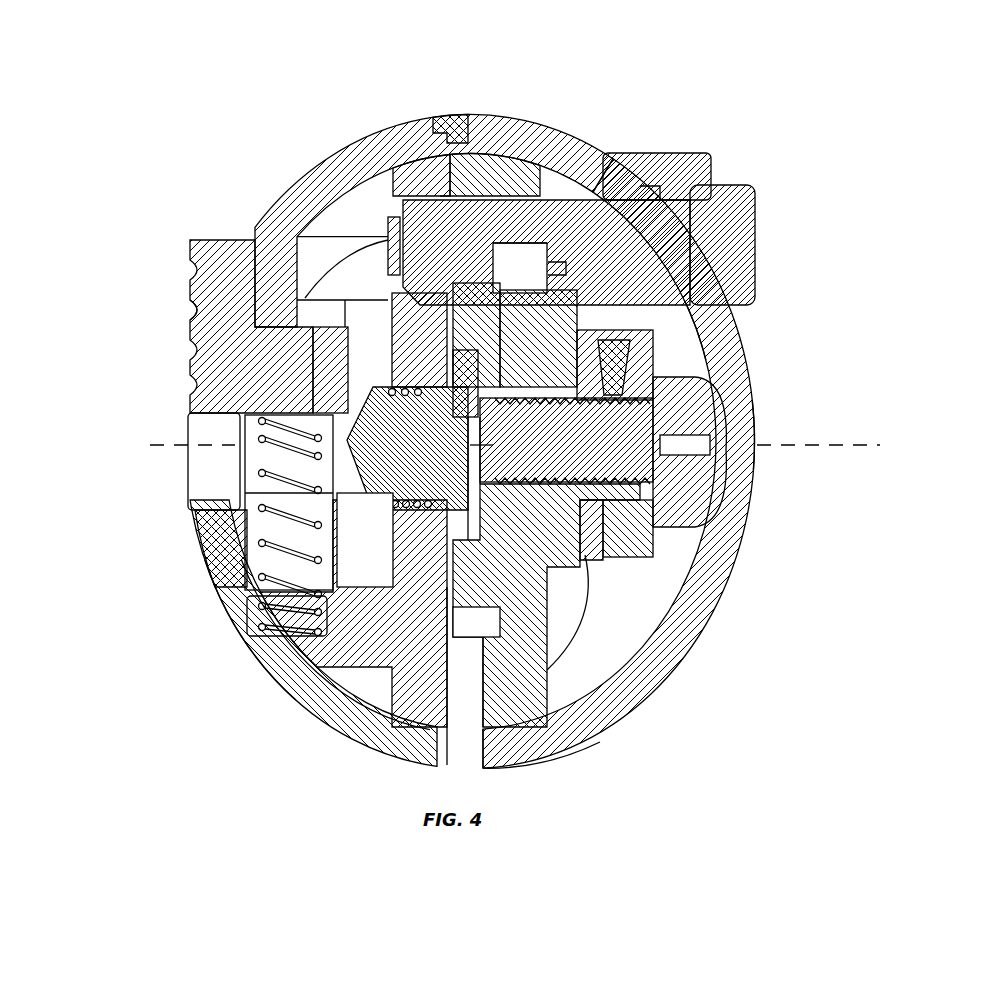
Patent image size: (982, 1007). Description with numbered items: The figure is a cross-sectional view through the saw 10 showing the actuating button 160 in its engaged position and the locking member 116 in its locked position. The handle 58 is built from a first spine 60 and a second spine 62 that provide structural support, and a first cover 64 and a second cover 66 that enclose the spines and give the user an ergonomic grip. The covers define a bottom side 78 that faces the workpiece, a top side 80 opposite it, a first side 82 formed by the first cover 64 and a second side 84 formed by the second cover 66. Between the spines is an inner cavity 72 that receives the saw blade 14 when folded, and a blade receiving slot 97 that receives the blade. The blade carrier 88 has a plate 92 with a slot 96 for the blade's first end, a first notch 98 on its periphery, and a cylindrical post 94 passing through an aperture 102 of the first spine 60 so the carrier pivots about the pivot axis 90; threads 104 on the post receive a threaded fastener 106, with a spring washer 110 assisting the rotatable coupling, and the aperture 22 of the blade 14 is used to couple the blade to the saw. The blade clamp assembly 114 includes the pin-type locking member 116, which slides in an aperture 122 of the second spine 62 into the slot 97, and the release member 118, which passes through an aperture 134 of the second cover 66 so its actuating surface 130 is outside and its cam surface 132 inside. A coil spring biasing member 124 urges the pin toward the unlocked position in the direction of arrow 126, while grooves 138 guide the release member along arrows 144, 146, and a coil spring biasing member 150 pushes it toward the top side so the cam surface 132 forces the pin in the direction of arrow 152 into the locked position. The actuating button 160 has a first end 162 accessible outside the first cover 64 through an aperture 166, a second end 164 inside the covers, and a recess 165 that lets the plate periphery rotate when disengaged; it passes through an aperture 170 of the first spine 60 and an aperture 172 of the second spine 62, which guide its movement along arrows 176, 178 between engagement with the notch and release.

The saw 10 is at (602, 90).
The saw blade 14 is at (505, 557).
The aperture 22 is at (470, 525).
The handle 58 is at (398, 208).
The first spine 60 is at (500, 167).
The second spine 62 is at (437, 190).
The first cover 64 is at (737, 553).
The second cover 66 is at (328, 727).
The inner cavity 72 is at (452, 764).
The bottom side 78 is at (500, 767).
The top side 80 is at (473, 118).
The first side 82 is at (753, 433).
The second side 84 is at (197, 510).
The blade carrier 88 is at (487, 300).
The pivot axis 90 is at (830, 450).
The plate 92 is at (487, 582).
The post 94 is at (625, 395).
The slot 96 is at (467, 363).
The blade receiving slot 97 is at (446, 536).
The first notch 98 is at (498, 249).
The aperture 102 is at (555, 335).
The threads 104 is at (660, 467).
The threaded fastener 106 is at (690, 380).
The spring washer 110 is at (710, 320).
The blade clamp assembly 114 is at (232, 663).
The locking member 116 is at (363, 405).
The release member 118 is at (228, 250).
The aperture 122 is at (343, 503).
The biasing member 124 is at (403, 552).
The arrow 126 is at (108, 450).
The actuating surface 130 is at (190, 296).
The cam surface 132 is at (310, 300).
The aperture 134 is at (200, 497).
The grooves 138 is at (387, 230).
The arrow 144 is at (106, 364).
The arrow 146 is at (106, 330).
The biasing member 150 is at (260, 612).
The arrow 152 is at (82, 450).
The actuating button 160 is at (725, 197).
The first end 162 is at (755, 195).
The second end 164 is at (400, 210).
The recess 165 is at (560, 268).
The aperture 166 is at (652, 196).
The aperture 170 is at (525, 200).
The aperture 172 is at (440, 190).
The arrow 176 is at (846, 250).
The arrow 178 is at (806, 250).